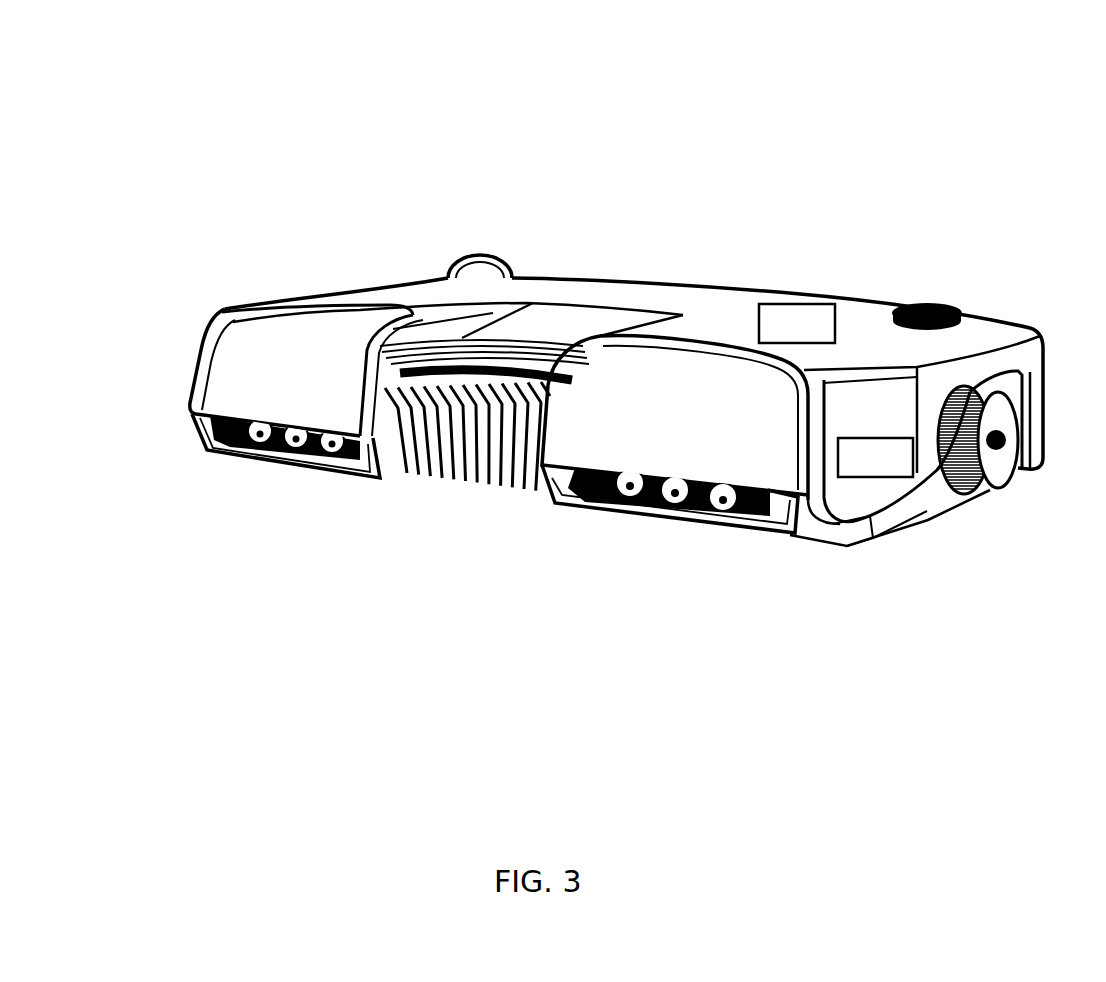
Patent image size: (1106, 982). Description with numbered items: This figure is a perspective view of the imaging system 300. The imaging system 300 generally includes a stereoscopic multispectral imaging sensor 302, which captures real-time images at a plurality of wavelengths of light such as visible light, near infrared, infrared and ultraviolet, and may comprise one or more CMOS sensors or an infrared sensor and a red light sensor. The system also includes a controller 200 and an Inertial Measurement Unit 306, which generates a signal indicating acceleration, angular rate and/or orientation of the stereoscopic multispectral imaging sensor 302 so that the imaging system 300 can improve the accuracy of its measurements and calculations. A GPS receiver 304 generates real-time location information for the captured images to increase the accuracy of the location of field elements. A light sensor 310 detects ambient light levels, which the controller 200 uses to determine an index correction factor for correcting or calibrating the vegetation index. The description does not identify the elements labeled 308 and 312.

The imaging system 300 is at (298, 122).
The stereoscopic multispectral imaging sensor 302 is at (482, 529).
The GPS receiver 304 is at (250, 460).
The Inertial Measurement Unit (IMU) 306 is at (728, 500).
The display panel 308 is at (798, 305).
The light sensor 310 is at (950, 305).
The dome antenna 312 is at (494, 254).
The controller 200 is at (877, 477).